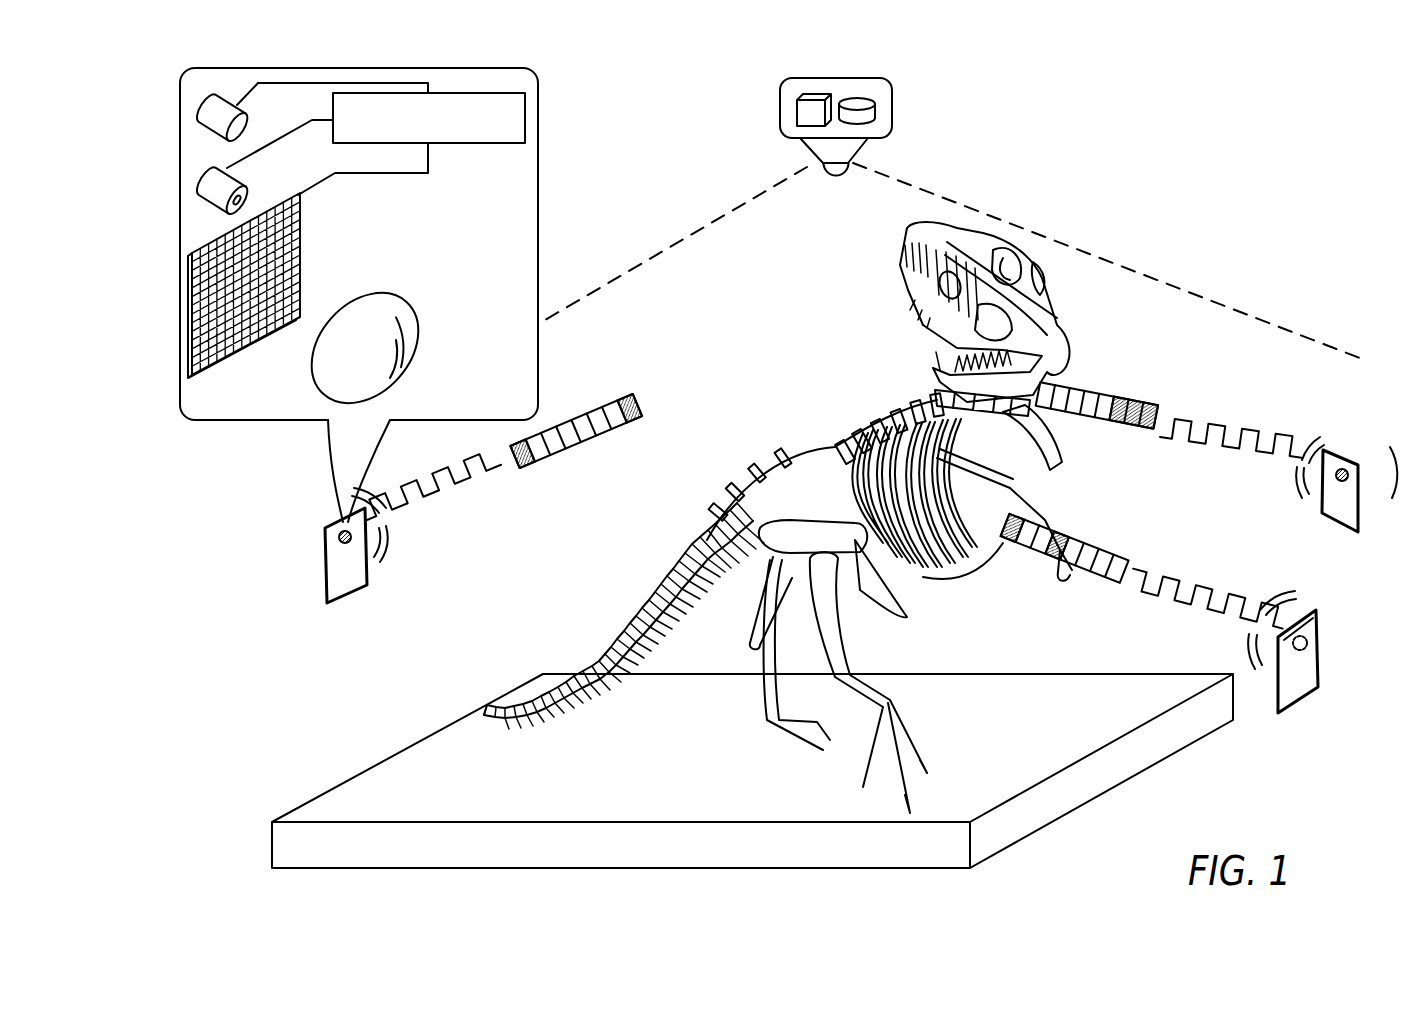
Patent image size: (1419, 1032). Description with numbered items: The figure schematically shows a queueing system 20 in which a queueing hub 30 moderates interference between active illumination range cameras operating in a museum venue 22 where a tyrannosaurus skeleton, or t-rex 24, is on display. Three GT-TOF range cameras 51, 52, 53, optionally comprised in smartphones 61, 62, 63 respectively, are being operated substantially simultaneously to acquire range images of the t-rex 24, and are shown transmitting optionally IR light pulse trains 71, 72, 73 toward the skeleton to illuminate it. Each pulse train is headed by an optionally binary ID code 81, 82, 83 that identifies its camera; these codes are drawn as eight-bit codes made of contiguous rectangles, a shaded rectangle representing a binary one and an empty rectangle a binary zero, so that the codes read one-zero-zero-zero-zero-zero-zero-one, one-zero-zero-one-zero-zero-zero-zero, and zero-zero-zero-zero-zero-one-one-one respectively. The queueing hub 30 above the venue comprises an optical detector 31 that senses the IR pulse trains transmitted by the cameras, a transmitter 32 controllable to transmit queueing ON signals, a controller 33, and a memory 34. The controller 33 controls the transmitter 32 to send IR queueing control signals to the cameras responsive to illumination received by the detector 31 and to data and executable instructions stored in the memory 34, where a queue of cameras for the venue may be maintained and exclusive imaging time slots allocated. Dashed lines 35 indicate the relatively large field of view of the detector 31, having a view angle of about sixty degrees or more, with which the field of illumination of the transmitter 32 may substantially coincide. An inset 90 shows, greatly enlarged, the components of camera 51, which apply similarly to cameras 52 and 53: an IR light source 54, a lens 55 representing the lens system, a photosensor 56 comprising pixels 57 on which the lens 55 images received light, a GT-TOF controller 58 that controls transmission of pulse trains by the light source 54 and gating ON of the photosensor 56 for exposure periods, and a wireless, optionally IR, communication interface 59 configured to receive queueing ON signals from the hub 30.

The queueing system 20 is at (1037, 181).
The museum venue 22 is at (1203, 228).
The tyrannosaurus skeleton 24 is at (888, 303).
The queueing hub 30 is at (804, 151).
The optical detector 31 is at (812, 152).
The transmitter 32 is at (836, 176).
The controller 33 is at (797, 113).
The memory 34 is at (875, 113).
The dashed lines 35 is at (686, 240).
The GT-TOF range camera 51 is at (326, 532).
The GT-TOF range camera 52 is at (1318, 636).
The GT-TOF range camera 53 is at (1335, 450).
The IR light source 54 is at (198, 200).
The lens 55 is at (408, 298).
The photosensor 56 is at (255, 285).
The pixels 57 is at (240, 304).
The GT-TOF controller 58 is at (493, 143).
The communication interface 59 is at (198, 122).
The smartphone 61 is at (324, 569).
The smartphone 62 is at (1312, 674).
The smartphone 63 is at (1346, 469).
The IR light pulse train 71 is at (471, 499).
The IR light pulse train 72 is at (1225, 574).
The IR light pulse train 73 is at (1223, 411).
The ID code 81 is at (611, 451).
The ID code 82 is at (1112, 535).
The ID code 83 is at (1114, 378).
The inset 90 is at (540, 218).